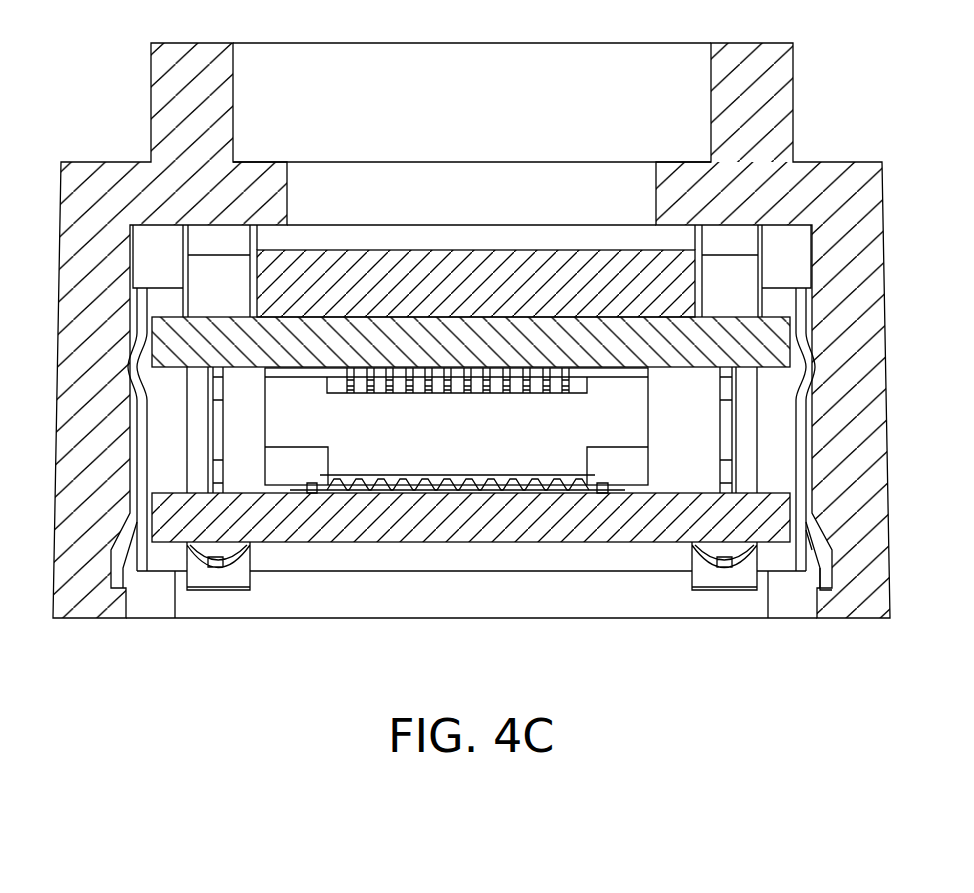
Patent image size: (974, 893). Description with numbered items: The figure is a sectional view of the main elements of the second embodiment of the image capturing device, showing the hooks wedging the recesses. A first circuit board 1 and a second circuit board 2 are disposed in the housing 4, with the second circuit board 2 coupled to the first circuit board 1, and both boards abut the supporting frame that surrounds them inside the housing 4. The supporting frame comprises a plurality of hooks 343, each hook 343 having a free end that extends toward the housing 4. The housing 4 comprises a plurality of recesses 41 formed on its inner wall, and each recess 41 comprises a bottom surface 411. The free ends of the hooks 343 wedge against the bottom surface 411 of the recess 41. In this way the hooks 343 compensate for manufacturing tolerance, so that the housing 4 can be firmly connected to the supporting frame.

The first circuit board 1 is at (783, 338).
The second circuit board 2 is at (167, 518).
The housing 4 is at (858, 424).
The recess 41 is at (540, 477).
The hook 343 is at (815, 551).
The bottom surface 411 is at (822, 588).